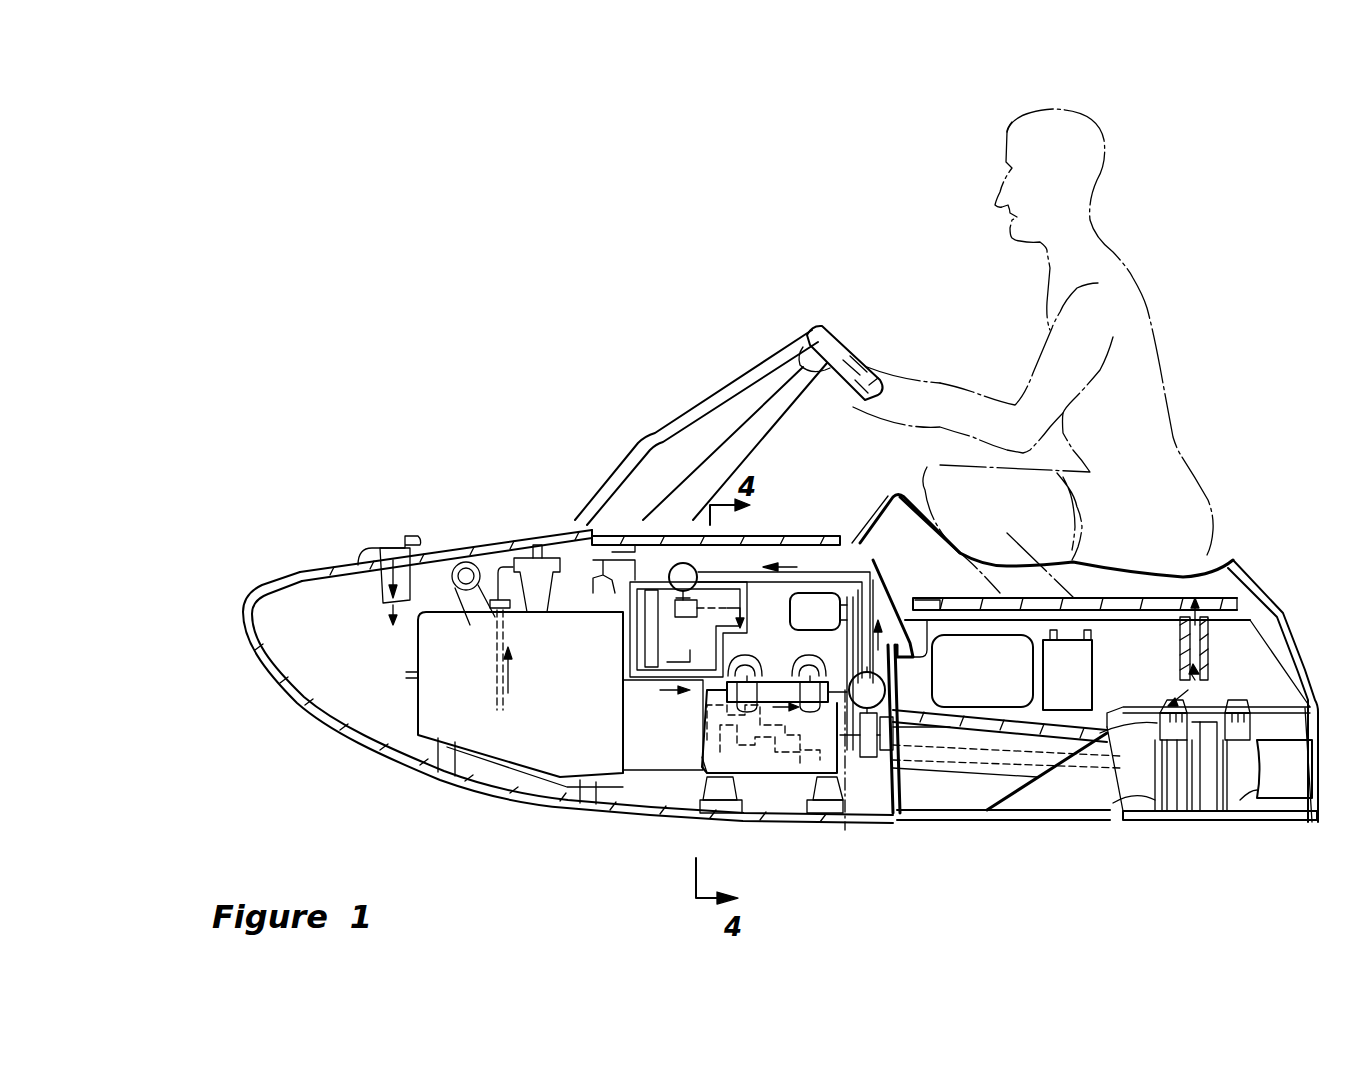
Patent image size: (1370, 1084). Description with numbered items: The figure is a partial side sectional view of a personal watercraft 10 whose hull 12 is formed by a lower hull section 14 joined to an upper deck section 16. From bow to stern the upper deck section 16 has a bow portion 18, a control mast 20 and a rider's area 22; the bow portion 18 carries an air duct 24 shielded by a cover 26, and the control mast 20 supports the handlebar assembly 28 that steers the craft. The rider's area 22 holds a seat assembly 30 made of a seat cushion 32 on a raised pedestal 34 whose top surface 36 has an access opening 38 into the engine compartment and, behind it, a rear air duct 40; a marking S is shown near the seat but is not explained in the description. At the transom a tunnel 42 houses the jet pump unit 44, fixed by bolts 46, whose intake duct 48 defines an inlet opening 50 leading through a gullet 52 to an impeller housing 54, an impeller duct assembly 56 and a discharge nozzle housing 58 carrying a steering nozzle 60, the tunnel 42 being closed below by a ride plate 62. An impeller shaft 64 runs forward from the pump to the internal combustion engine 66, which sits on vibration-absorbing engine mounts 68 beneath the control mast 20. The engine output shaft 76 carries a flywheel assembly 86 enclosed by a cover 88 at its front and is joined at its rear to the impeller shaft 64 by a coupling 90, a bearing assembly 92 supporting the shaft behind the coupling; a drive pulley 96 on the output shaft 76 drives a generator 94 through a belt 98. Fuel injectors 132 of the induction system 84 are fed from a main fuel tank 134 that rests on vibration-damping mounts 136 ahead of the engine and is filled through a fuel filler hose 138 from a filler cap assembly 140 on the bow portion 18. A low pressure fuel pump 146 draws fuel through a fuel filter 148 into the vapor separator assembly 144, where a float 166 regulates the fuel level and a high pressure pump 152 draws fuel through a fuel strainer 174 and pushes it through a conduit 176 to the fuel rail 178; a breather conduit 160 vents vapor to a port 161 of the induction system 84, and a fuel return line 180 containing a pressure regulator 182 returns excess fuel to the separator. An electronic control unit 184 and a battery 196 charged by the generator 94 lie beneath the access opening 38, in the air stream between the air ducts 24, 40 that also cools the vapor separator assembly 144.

The personal watercraft 10 is at (382, 388).
The hull 12 is at (236, 668).
The lower hull section 14 is at (302, 722).
The upper deck section 16 is at (296, 565).
The bow portion 18 is at (509, 526).
The control mast 20 is at (675, 402).
The rider's area 22 is at (1190, 426).
The air duct 24 is at (380, 578).
The cover 26 is at (388, 540).
The handlebar assembly 28 is at (818, 333).
The seat assembly 30 is at (1303, 632).
The seat cushion 32 is at (1232, 560).
The raised pedestal 34 is at (1306, 670).
The top surface of the pedestal 36 is at (1132, 612).
The access opening 38 is at (1100, 598).
The rear air duct 40 is at (1203, 683).
The tunnel 42 is at (905, 790).
The jet pump unit 44 is at (1250, 813).
The bolts 46 is at (1318, 782).
The intake duct 48 is at (1013, 800).
The inlet opening 50 is at (1077, 820).
The gullet 52 is at (1112, 795).
The impeller housing 54 is at (1185, 813).
The impeller duct assembly 56 is at (1208, 813).
The discharge nozzle housing 58 is at (1245, 813).
The steering nozzle 60 is at (1315, 790).
The ride plate 62 is at (1318, 830).
The impeller shaft 64 is at (968, 760).
The internal combustion engine 66 is at (730, 800).
The engine mounts 68 is at (720, 813).
The output shaft 76 is at (789, 790).
The induction system 84 is at (808, 640).
The flywheel assembly 86 is at (705, 757).
The cover 88 is at (705, 790).
The coupling 90 is at (866, 770).
The bearing assembly 92 is at (893, 760).
The generator 94 is at (820, 700).
The drive pulley 96 is at (845, 780).
The belt 98 is at (893, 580).
The fuel injectors 132 is at (830, 630).
The main fuel tank 134 is at (505, 790).
The vibration-damping mounts 136 is at (443, 770).
The fuel filler hose 138 is at (475, 615).
The filler cap assembly 140 is at (447, 582).
The vapor separator assembly 144 is at (690, 697).
The low pressure fuel pump 146 is at (672, 560).
The fuel filter 148 is at (540, 558).
The high pressure pump 152 is at (650, 660).
The breather conduit 160 is at (735, 580).
The port 161 is at (762, 648).
The float 166 is at (652, 697).
The fuel strainer 174 is at (680, 615).
The conduit 176 is at (500, 620).
The fuel rail 178 is at (805, 600).
The fuel return line 180 is at (893, 600).
The pressure regulator 182 is at (905, 685).
The electronic control unit 184 is at (990, 598).
The battery 196 is at (1098, 660).
The seat surface S is at (1238, 600).